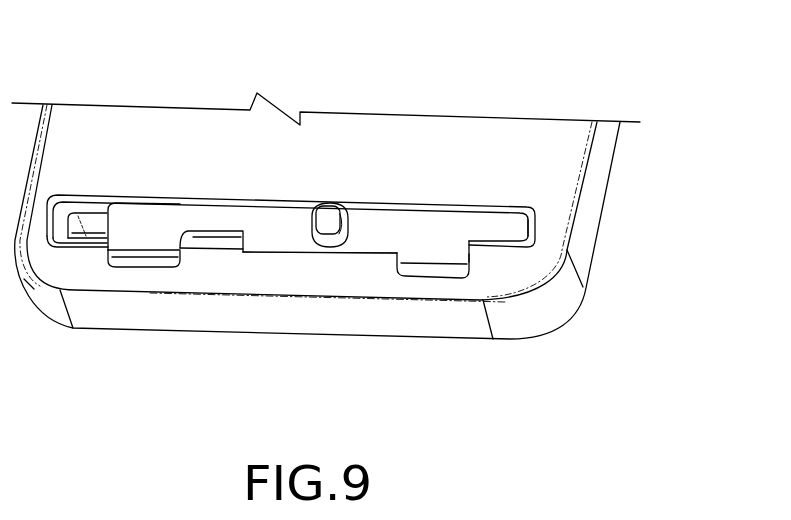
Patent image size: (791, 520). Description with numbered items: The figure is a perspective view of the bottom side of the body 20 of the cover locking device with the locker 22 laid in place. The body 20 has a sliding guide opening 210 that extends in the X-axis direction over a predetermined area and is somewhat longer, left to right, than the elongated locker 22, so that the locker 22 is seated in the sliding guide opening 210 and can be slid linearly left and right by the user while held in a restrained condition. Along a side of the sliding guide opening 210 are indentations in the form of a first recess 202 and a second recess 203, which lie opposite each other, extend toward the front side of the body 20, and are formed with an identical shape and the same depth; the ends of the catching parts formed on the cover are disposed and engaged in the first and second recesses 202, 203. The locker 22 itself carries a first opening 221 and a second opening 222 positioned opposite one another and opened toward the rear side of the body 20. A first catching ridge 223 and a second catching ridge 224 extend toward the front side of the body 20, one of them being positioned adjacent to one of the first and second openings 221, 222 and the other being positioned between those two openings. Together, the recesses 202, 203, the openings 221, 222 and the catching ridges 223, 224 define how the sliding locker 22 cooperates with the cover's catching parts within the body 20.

The body 20 is at (612, 198).
The locker 22 is at (392, 228).
The sliding guide opening 210 is at (97, 198).
The first opening 221 is at (206, 238).
The second opening 222 is at (493, 243).
The first catching ridge 223 is at (147, 243).
The second catching ridge 224 is at (290, 243).
The first recess 202 is at (162, 259).
The second recess 203 is at (437, 270).